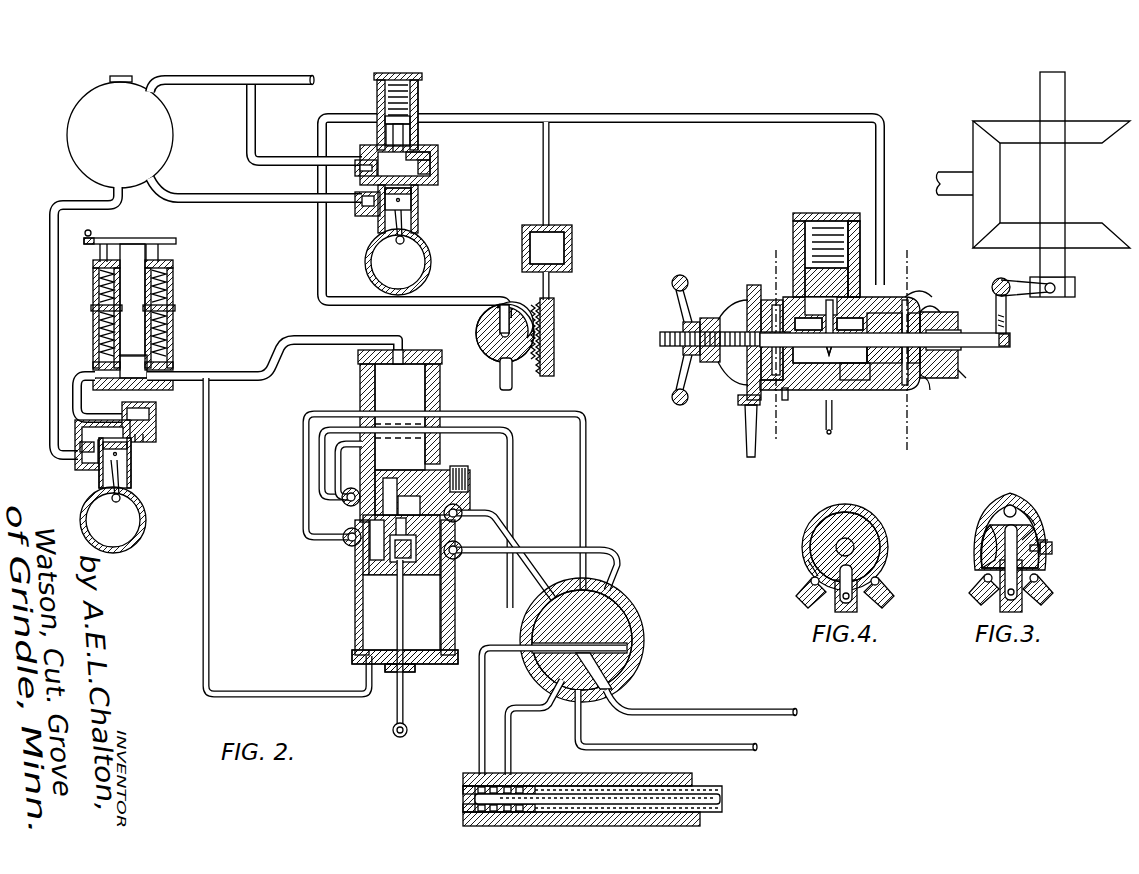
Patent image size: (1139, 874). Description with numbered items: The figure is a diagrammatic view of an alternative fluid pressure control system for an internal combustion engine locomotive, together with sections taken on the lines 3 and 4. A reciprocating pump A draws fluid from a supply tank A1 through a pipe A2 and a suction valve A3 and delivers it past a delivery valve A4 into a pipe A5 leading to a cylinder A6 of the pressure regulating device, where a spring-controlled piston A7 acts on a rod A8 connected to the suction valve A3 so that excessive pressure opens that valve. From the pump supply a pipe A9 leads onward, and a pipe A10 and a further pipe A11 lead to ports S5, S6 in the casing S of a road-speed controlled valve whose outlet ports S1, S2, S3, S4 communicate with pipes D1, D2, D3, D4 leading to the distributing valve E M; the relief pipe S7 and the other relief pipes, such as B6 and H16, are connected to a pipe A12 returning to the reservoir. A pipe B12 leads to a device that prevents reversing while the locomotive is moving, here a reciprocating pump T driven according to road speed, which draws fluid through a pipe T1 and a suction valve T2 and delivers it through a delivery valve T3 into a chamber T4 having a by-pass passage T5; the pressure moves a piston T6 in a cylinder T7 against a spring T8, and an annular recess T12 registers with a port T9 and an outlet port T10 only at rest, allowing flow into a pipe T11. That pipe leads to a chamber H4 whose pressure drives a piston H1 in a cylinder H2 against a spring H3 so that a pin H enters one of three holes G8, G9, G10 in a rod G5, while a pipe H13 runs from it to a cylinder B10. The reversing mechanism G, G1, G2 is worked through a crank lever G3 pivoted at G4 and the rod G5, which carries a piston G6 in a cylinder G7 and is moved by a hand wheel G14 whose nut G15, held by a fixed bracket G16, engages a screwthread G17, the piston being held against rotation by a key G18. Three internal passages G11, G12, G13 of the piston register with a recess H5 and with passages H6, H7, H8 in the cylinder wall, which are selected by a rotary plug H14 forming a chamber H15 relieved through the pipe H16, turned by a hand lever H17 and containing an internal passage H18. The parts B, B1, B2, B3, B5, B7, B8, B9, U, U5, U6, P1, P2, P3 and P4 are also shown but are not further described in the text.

In FIG. 2, the reciprocating pump A is at (136, 491).
In FIG. 2, the supply tank A1 is at (120, 132).
In FIG. 2, the pipe A2 is at (56, 310).
In FIG. 2, the suction valve A3 is at (96, 457).
In FIG. 2, the delivery valve A4 is at (158, 416).
In FIG. 2, the pipe A5 is at (76, 386).
In FIG. 2, the cylinder A6 is at (134, 370).
In FIG. 2, the spring-controlled piston A7 is at (140, 290).
In FIG. 2, the rod A8 is at (97, 325).
In FIG. 2, the pipe A9 is at (232, 372).
In FIG. 2, the pipe A10 is at (392, 338).
In FIG. 2, the pipe A11 is at (209, 478).
In FIG. 2, the pipe A12 is at (216, 81).
In FIG. 2, the reciprocating pump T is at (410, 216).
In FIG. 2, the pipe T1 is at (220, 194).
In FIG. 2, the suction valve T2 is at (370, 212).
In FIG. 2, the delivery valve T3 is at (432, 167).
In FIG. 2, the chamber T4 is at (440, 149).
In FIG. 2, the by-pass passage T5 is at (256, 120).
In FIG. 2, the piston T6 is at (405, 136).
In FIG. 2, the cylinder T7 is at (374, 167).
In FIG. 2, the spring T8 is at (376, 80).
In FIG. 2, the port T9 is at (386, 118).
In FIG. 2, the outlet port T10 is at (388, 130).
In FIG. 2, the pipe T11 is at (543, 115).
In FIG. 2, the annular recess T12 is at (420, 103).
In FIG. 2, the cam disc B is at (483, 348).
In FIG. 2, the rod B1 is at (542, 297).
In FIG. 2, the pipe connection B2 is at (505, 302).
In FIG. 2, the slot B3 is at (496, 358).
In FIG. 2, the disc B5 is at (480, 325).
In FIG. 2, the relief pipe B6 is at (514, 374).
In FIG. 2, the gear teeth B7 is at (540, 360).
In FIG. 2, the rack B8 is at (556, 305).
In FIG. 2, the chamber B9 is at (568, 265).
In FIG. 2, the cylinder B10 is at (566, 241).
In FIG. 2, the pipe B12 is at (463, 298).
In FIG. 2, the valve casing S is at (358, 593).
In FIG. 2, the outlet port S1 is at (341, 495).
In FIG. 2, the outlet port S2 is at (462, 510).
In FIG. 2, the outlet port S3 is at (344, 540).
In FIG. 2, the outlet port S4 is at (462, 548).
In FIG. 2, the port S5 is at (410, 343).
In FIG. 2, the port S6 is at (358, 652).
In FIG. 2, the relief pipe S7 is at (468, 480).
In FIG. 2, the valve U is at (362, 558).
In FIG. 2, the valve element U5 is at (455, 560).
In FIG. 2, the valve rod U6 is at (404, 700).
In FIG. 2, the pipe D1 is at (512, 463).
In FIG. 2, the pipe D2 is at (538, 558).
In FIG. 2, the pipe D3 is at (586, 480).
In FIG. 2, the pipe D4 is at (553, 545).
In FIG. 2, the distributing valve E is at (600, 640).
In FIG. 2, the distributing valve M is at (642, 620).
In FIG. 2, the pipe P1 is at (477, 736).
In FIG. 2, the pipe P2 is at (514, 706).
In FIG. 2, the pipe P3 is at (579, 742).
In FIG. 2, the pipe P4 is at (700, 718).
In FIG. 2, the pin H is at (832, 300).
In FIG. 2, the piston H1 is at (858, 245).
In FIG. 2, the cylinder H2 is at (804, 228).
In FIG. 2, the spring H3 is at (826, 228).
In FIG. 2, the chamber H4 is at (912, 298).
In FIG. 3, the chamber H4 is at (1012, 505).
In FIG. 2, the recess H5 is at (935, 305).
In FIG. 3, the recess H5 is at (1025, 515).
In FIG. 4, the passage H6 is at (884, 578).
In FIG. 3, the passage H6 is at (1042, 576).
In FIG. 2, the passage H7 is at (853, 380).
In FIG. 4, the passage H7 is at (852, 600).
In FIG. 3, the passage H7 is at (1015, 600).
In FIG. 4, the passage H8 is at (808, 580).
In FIG. 3, the passage H8 is at (982, 574).
In FIG. 2, the pipe H13 is at (543, 194).
In FIG. 2, the rotary plug H14 is at (780, 298).
In FIG. 4, the rotary plug H14 is at (818, 520).
In FIG. 2, the chamber H15 is at (828, 358).
In FIG. 2, the relief pipe H16 is at (829, 433).
In FIG. 2, the hand lever H17 is at (748, 408).
In FIG. 2, the internal passage H18 is at (787, 400).
In FIG. 4, the internal passage H18 is at (810, 570).
In FIG. 2, the reversing mechanism G is at (986, 150).
In FIG. 2, the reversing mechanism G1 is at (1015, 130).
In FIG. 2, the reversing mechanism G2 is at (1080, 235).
In FIG. 2, the crank lever G3 is at (1008, 324).
In FIG. 2, the pivot G4 is at (1010, 295).
In FIG. 2, the rod G5 is at (988, 348).
In FIG. 4, the rod G5 is at (846, 536).
In FIG. 2, the piston G6 is at (928, 385).
In FIG. 3, the piston G6 is at (1040, 536).
In FIG. 2, the cylinder G7 is at (948, 312).
In FIG. 4, the cylinder G7 is at (880, 520).
In FIG. 3, the cylinder G7 is at (986, 522).
In FIG. 2, the hole G8 is at (808, 323).
In FIG. 2, the hole G9 is at (830, 353).
In FIG. 2, the hole G10 is at (852, 323).
In FIG. 2, the internal passage G11 is at (880, 380).
In FIG. 3, the internal passage G11 is at (1036, 522).
In FIG. 2, the internal passage G12 is at (912, 380).
In FIG. 3, the internal passage G12 is at (994, 502).
In FIG. 2, the internal passage G13 is at (962, 378).
In FIG. 3, the internal passage G13 is at (990, 535).
In FIG. 2, the hand wheel G14 is at (677, 300).
In FIG. 2, the nut G15 is at (706, 316).
In FIG. 2, the fixed bracket G16 is at (740, 285).
In FIG. 2, the screwthread G17 is at (665, 346).
In FIG. 3, the key G18 is at (1057, 541).
In FIG. 2, the section line 3 is at (906, 343).
In FIG. 2, the section line 4 is at (773, 349).